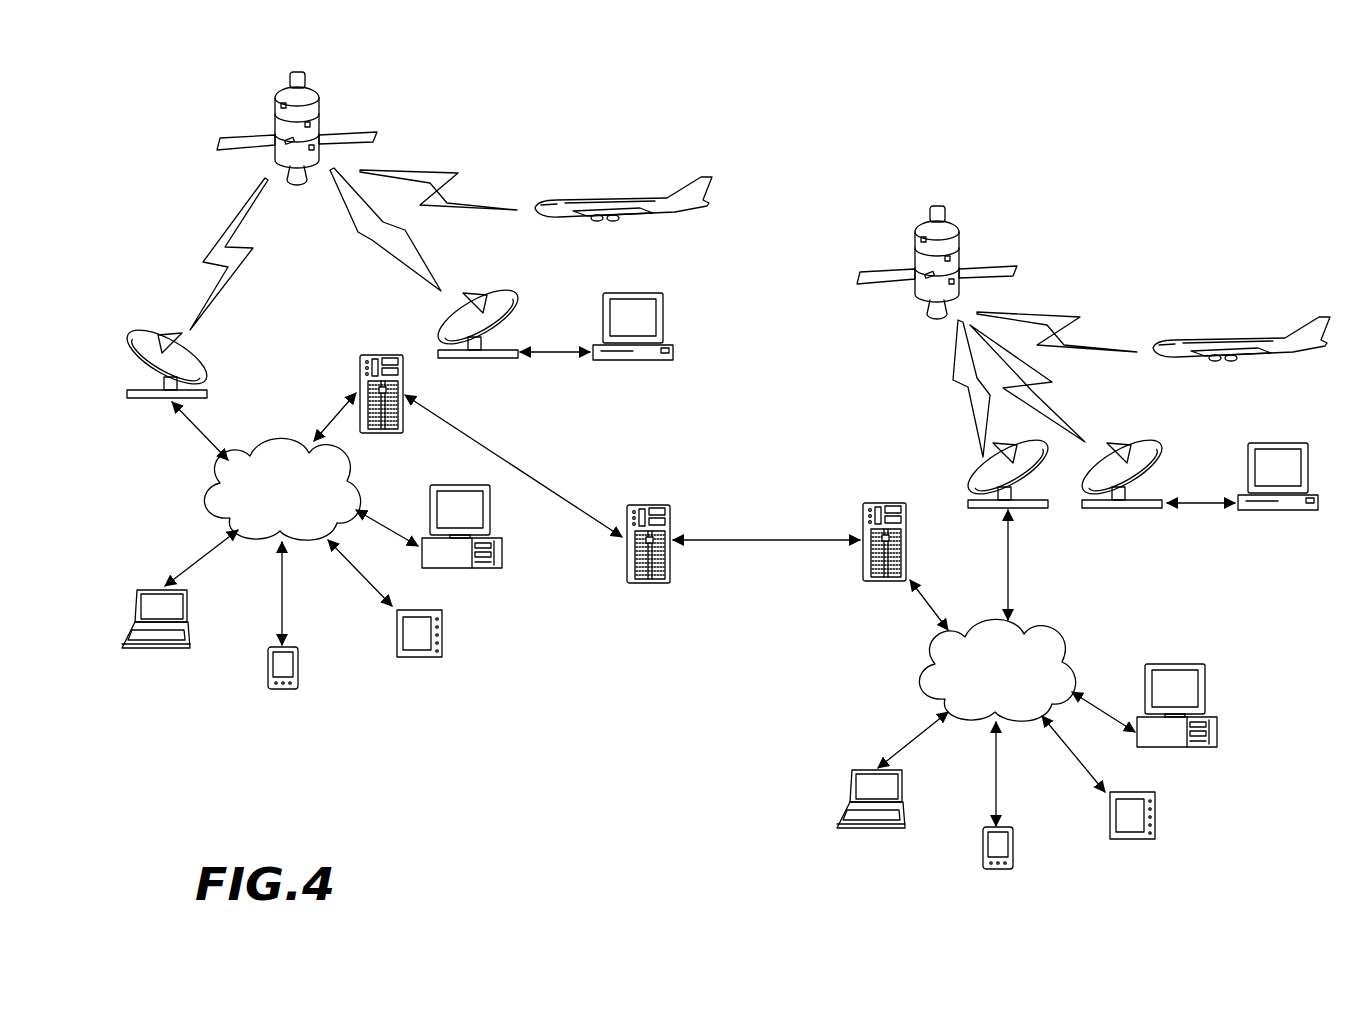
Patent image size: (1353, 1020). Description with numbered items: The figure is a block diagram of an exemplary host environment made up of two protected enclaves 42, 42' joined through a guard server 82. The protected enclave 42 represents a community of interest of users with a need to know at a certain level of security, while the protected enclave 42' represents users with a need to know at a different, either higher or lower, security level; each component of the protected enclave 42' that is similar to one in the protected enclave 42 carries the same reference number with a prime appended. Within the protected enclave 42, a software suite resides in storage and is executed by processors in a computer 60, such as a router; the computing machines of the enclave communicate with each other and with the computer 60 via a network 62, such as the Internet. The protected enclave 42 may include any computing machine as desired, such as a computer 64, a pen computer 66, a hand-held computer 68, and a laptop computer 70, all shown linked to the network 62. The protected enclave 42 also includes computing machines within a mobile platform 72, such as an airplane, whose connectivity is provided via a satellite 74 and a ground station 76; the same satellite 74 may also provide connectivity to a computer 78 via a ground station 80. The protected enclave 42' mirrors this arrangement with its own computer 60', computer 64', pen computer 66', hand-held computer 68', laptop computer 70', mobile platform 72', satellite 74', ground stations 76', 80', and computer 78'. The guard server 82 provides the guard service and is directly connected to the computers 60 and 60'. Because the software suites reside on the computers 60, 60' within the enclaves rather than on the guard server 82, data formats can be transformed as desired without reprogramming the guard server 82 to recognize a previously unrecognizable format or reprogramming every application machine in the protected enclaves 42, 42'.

The protected enclave 42 is at (620, 80).
The protected enclave 42' is at (1260, 207).
The computer 60 is at (350, 387).
The computer 60' is at (852, 528).
The network 62 is at (205, 490).
The computer 64 is at (486, 546).
The computer 64' is at (1205, 724).
The pen computer 66 is at (432, 658).
The pen computer 66' is at (1149, 839).
The hand-held computer 68 is at (253, 682).
The hand-held computer 68' is at (966, 861).
The laptop computer 70 is at (133, 617).
The laptop computer 70' is at (845, 794).
The mobile platform 72 is at (623, 187).
The mobile platform 72' is at (1241, 326).
The satellite 74 is at (295, 126).
The satellite 74' is at (936, 254).
The ground station 76 is at (136, 359).
The ground station 76' is at (983, 469).
The computer 78 is at (647, 349).
The computer 78' is at (1295, 498).
The ground station 80 is at (484, 342).
The ground station 80' is at (1146, 491).
The guard server 82 is at (650, 585).